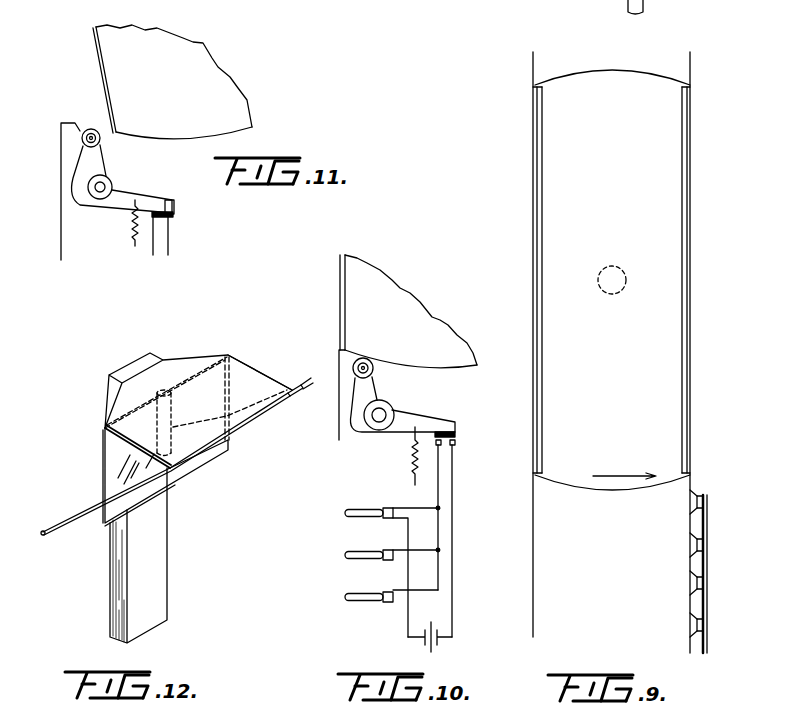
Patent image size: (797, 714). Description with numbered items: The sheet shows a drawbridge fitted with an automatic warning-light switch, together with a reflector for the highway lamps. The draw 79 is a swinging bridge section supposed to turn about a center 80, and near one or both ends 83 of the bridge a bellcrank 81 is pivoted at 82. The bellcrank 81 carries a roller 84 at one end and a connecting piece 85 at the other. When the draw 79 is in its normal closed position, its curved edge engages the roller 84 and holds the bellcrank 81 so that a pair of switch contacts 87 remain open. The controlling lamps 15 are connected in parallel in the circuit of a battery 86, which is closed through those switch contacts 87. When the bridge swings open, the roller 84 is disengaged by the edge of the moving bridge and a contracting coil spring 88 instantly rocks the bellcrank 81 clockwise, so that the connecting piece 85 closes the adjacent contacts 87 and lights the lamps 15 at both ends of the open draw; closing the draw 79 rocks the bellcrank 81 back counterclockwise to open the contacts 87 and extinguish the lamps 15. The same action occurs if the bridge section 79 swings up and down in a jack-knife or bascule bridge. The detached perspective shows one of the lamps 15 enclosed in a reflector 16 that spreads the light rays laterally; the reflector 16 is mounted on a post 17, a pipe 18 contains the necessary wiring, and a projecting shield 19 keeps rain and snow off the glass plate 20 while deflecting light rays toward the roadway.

In FIG. 12, the electric lights 15 is at (181, 423).
In FIG. 10, the electric lights 15 is at (355, 553).
In FIG. 9, the electric lights 15 is at (694, 545).
In FIG. 12, the reflector 16 is at (185, 366).
In FIG. 12, the post 17 is at (150, 548).
In FIG. 12, the pipe 18 is at (62, 520).
In FIG. 12, the projecting shield 19 is at (246, 378).
In FIG. 12, the glass plate 20 is at (122, 467).
In FIG. 11, the draw 79 is at (172, 82).
In FIG. 10, the draw 79 is at (408, 311).
In FIG. 9, the draw 79 is at (611, 280).
In FIG. 9, the center 80 is at (616, 268).
In FIG. 11, the bellcrank 81 is at (90, 163).
In FIG. 10, the bellcrank 81 is at (357, 425).
In FIG. 11, the pivot 82 is at (100, 192).
In FIG. 10, the pivot 82 is at (380, 420).
In FIG. 11, the end of the bridge 83 is at (74, 122).
In FIG. 10, the end of the bridge 83 is at (342, 395).
In FIG. 9, the end of the bridge 83 is at (586, 488).
In FIG. 11, the roller 84 is at (83, 145).
In FIG. 10, the roller 84 is at (375, 370).
In FIG. 11, the connecting piece 85 is at (172, 200).
In FIG. 10, the connecting piece 85 is at (455, 433).
In FIG. 10, the battery 86 is at (431, 627).
In FIG. 11, the switch contacts 87 is at (172, 217).
In FIG. 10, the switch contacts 87 is at (452, 450).
In FIG. 11, the contracting coil spring 88 is at (134, 237).
In FIG. 10, the contracting coil spring 88 is at (410, 468).